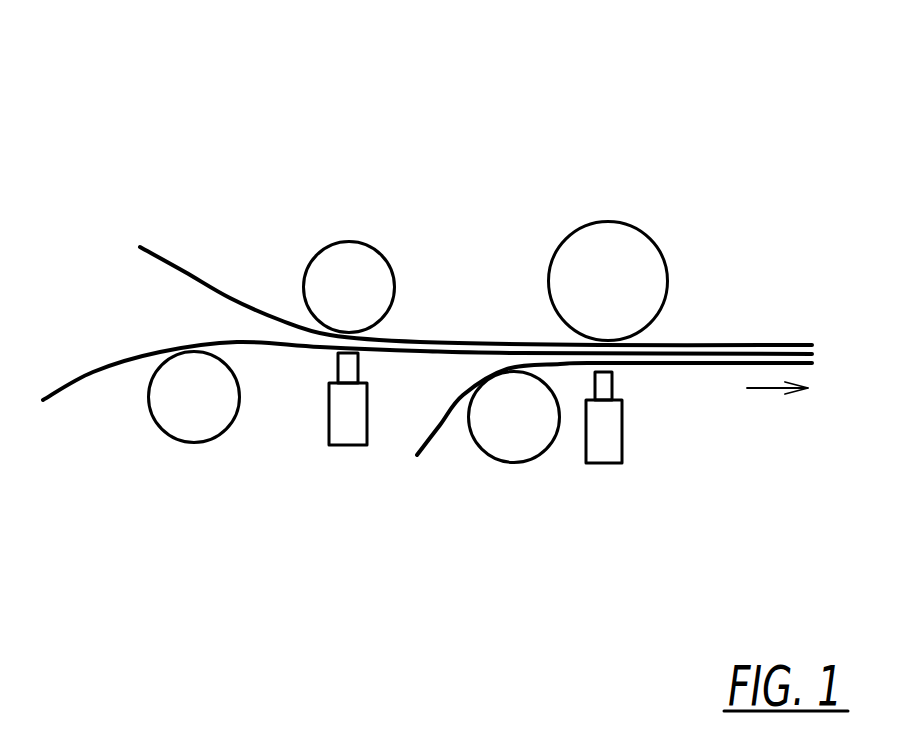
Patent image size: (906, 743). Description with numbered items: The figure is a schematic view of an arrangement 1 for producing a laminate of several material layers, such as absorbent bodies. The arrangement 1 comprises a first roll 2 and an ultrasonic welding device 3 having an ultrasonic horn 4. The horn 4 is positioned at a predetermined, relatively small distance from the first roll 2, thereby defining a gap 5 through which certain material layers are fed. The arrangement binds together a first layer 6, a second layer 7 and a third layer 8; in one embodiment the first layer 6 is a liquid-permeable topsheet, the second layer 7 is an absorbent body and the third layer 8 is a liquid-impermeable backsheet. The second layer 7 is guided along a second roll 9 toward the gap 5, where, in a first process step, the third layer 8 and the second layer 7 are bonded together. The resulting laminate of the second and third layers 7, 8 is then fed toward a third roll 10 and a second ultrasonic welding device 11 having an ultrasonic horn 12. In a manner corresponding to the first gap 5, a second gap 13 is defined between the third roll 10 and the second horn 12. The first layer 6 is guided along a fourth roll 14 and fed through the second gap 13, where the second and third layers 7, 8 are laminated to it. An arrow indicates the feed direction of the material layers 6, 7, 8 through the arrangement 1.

The arrangement 1 is at (231, 124).
The first roll 2 is at (332, 258).
The ultrasonic welding device 3 is at (350, 438).
The ultrasonic horn 4 is at (340, 367).
The gap 5 is at (384, 333).
The first layer 6 is at (440, 420).
The second layer 7 is at (93, 372).
The third layer 8 is at (191, 280).
The second roll 9 is at (194, 438).
The third roll 10 is at (609, 232).
The second ultrasonic welding device 11 is at (608, 452).
The ultrasonic horn 12 is at (605, 382).
The second gap 13 is at (649, 336).
The fourth roll 14 is at (518, 453).